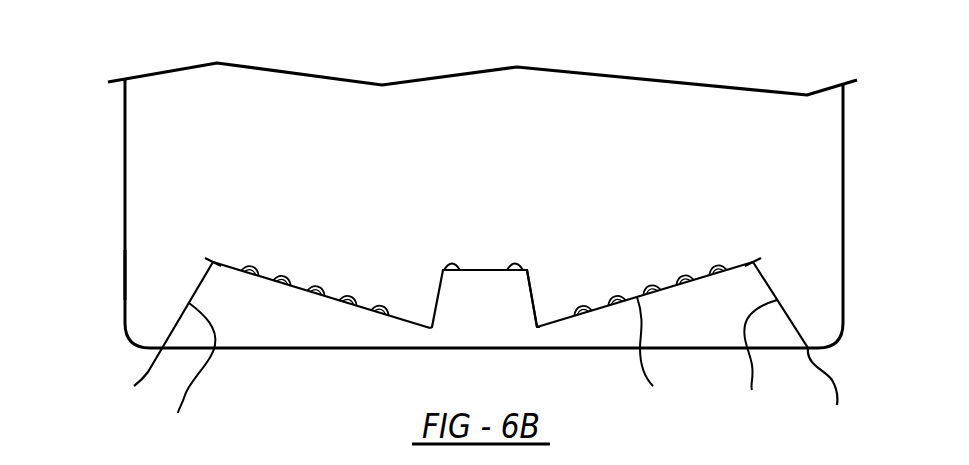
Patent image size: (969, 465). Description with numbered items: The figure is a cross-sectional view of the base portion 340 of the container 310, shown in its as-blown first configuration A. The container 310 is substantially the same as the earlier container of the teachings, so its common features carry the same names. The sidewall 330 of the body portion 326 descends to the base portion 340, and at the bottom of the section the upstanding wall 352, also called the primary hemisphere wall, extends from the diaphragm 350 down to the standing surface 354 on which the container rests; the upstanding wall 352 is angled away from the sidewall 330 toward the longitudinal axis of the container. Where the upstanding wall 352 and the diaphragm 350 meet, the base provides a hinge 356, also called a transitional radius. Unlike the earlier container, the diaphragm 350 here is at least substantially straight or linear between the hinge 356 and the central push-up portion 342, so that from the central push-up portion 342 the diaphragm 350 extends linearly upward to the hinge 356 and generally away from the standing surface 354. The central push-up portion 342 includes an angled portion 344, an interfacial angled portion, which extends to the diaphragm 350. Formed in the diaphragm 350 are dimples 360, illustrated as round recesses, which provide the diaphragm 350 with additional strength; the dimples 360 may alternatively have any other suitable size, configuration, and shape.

The container 310 is at (94, 115).
The sidewall 330 is at (125, 213).
The body portion 326 is at (125, 292).
The base portion 340 is at (304, 360).
The central push-up portion 342 is at (477, 271).
The angled portion 344 is at (530, 302).
The diaphragm 350 is at (333, 296).
The upstanding wall 352 is at (465, 375).
The standing surface 354 is at (475, 348).
The hinge 356 is at (213, 262).
The dimples 360 is at (287, 275).
The first configuration A is at (651, 355).